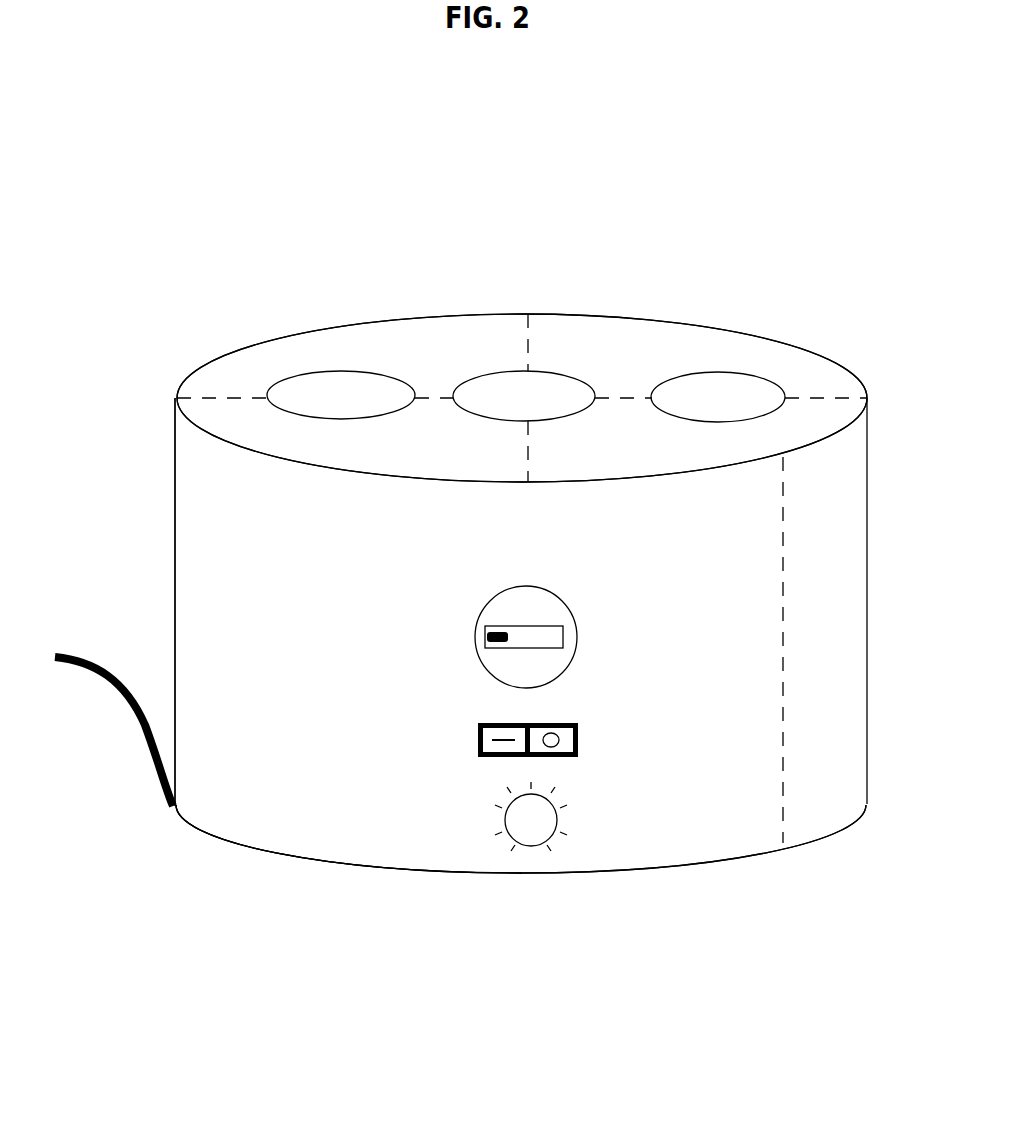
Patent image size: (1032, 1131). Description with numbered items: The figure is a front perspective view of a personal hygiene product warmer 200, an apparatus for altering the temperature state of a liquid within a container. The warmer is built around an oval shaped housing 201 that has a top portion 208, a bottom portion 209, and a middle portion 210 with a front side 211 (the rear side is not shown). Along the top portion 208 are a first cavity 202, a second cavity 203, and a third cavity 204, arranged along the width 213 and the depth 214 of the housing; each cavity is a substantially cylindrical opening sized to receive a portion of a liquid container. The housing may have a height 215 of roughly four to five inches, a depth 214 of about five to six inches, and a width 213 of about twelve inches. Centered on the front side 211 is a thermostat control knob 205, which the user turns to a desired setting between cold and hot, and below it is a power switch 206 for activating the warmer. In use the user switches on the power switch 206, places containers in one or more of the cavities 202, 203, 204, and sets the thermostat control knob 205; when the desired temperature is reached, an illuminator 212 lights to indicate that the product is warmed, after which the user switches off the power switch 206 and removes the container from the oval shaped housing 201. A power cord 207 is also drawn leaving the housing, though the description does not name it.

The personal hygiene product warmer 200 is at (195, 332).
The oval shaped housing 201 is at (157, 553).
The first cavity 202 is at (318, 368).
The second cavity 203 is at (503, 367).
The third cavity 204 is at (700, 367).
The thermostat control knob 205 is at (550, 673).
The power switch 206 is at (463, 757).
The power cord 207 is at (119, 727).
The top portion 208 is at (798, 373).
The bottom portion 209 is at (708, 867).
The middle portion 210 is at (230, 518).
The front side 211 is at (437, 842).
The illuminator 212 is at (535, 843).
The width 213 is at (178, 398).
The depth 214 is at (530, 333).
The height 215 is at (773, 748).